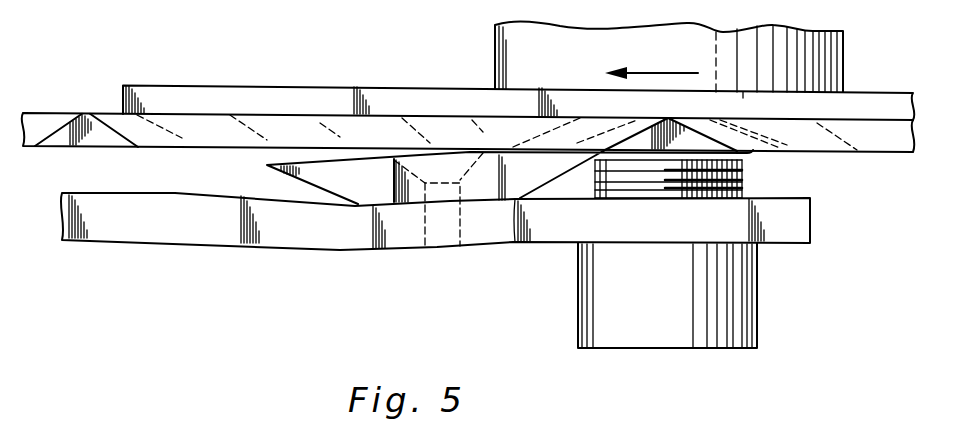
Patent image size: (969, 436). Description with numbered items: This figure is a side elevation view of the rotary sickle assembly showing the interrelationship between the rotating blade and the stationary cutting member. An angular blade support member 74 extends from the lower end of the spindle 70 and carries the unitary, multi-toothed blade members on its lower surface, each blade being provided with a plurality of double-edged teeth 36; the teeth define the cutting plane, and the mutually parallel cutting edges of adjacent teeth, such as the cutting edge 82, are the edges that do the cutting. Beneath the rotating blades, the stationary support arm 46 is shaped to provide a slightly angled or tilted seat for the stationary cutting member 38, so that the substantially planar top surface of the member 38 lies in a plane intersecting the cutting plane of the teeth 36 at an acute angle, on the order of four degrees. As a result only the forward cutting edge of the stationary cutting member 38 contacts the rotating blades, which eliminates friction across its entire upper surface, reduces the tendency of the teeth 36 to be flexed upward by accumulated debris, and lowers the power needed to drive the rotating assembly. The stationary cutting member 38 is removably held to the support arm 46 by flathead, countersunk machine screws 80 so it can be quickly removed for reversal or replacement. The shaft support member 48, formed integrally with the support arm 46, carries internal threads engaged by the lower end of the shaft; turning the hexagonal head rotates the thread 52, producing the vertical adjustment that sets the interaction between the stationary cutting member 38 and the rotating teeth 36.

The teeth 36 is at (104, 113).
The stationary cutting member 38 is at (322, 176).
The support arm 46 is at (304, 248).
The shaft support member 48 is at (758, 300).
The thread 52 is at (742, 188).
The spindle 70 is at (494, 64).
The blade support member 74 is at (313, 86).
The flathead countersunk machine screws 80 is at (438, 248).
The cutting edge 82 is at (662, 72).